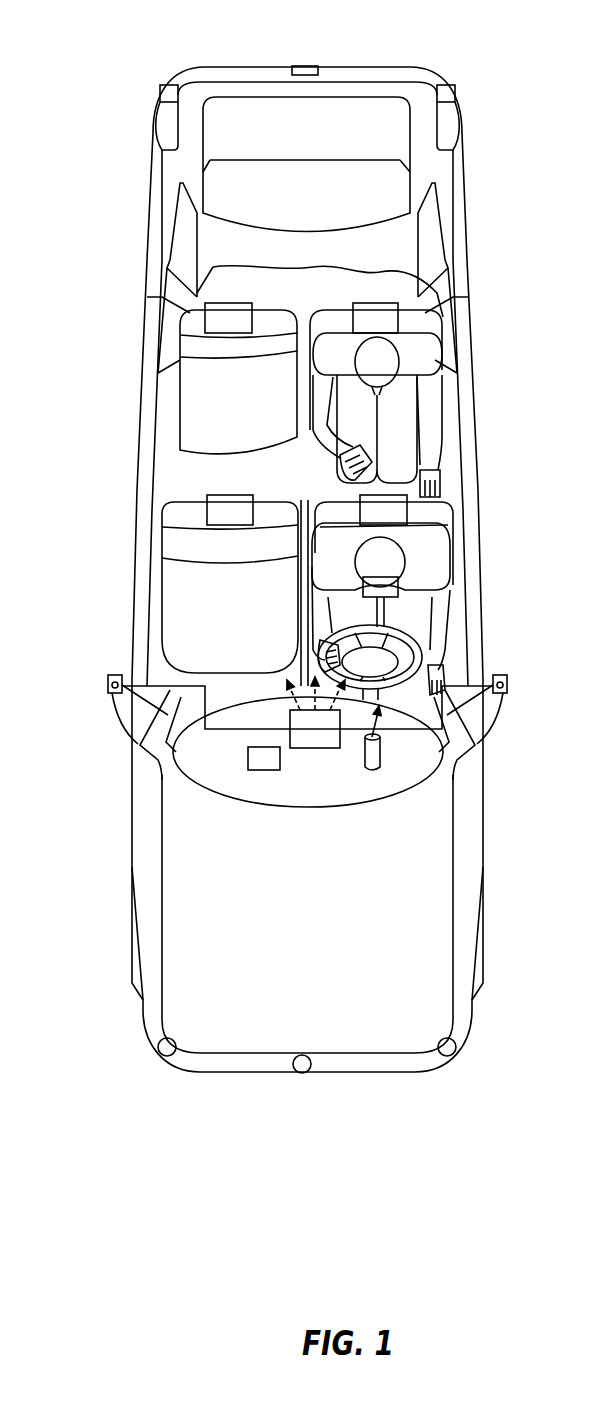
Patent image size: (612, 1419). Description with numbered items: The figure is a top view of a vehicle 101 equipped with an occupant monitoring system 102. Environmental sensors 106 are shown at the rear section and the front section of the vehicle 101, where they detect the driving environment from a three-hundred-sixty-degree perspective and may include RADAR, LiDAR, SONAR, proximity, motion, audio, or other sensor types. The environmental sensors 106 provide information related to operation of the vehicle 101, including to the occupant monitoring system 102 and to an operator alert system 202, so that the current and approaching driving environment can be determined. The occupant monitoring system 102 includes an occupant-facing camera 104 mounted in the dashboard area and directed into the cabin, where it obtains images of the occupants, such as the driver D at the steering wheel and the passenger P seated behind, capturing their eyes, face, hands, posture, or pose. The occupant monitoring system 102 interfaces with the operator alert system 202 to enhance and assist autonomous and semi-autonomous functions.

The vehicle 101 is at (114, 813).
The occupant monitoring system 102 is at (255, 765).
The occupant-facing camera 104 is at (310, 745).
The environmental sensors 106 is at (170, 85).
The operator alert system 202 is at (373, 762).
The passenger P is at (428, 344).
The driver D is at (440, 570).